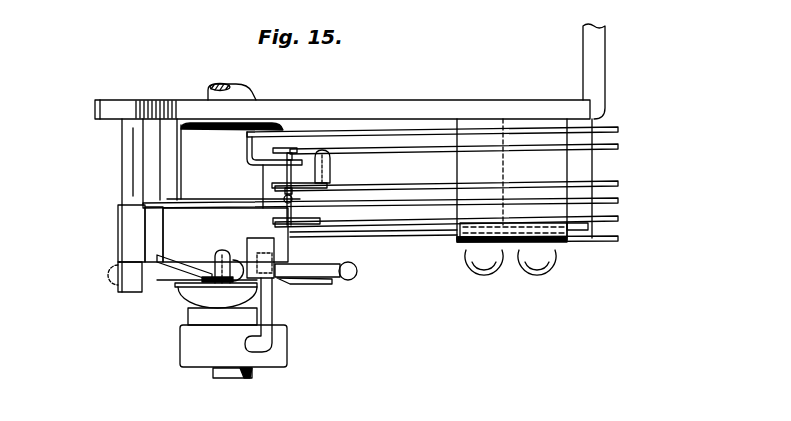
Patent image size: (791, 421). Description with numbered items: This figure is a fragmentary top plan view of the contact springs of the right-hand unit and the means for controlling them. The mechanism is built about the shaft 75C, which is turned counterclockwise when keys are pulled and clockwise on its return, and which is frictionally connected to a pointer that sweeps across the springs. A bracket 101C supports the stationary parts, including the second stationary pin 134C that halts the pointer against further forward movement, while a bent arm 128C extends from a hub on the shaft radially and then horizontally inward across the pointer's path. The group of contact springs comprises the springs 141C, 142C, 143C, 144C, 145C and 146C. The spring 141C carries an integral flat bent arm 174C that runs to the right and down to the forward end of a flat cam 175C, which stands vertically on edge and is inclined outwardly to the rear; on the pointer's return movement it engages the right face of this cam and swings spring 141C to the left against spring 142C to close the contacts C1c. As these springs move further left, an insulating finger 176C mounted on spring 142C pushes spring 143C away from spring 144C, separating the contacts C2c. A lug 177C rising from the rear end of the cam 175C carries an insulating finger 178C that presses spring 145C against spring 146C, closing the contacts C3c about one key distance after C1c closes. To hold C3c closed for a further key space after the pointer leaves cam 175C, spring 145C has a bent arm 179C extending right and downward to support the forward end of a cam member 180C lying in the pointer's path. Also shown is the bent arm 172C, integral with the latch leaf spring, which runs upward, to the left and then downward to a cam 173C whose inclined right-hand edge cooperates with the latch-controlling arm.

The shaft 75C is at (247, 91).
The bracket 101C is at (600, 60).
The second stationary pin 134C is at (130, 177).
The contact spring 143C is at (397, 131).
The contact spring 144C is at (422, 148).
The contact spring 142C is at (398, 184).
The contact spring 141C is at (403, 207).
The contact spring 145C is at (384, 243).
The contact spring 146C is at (395, 222).
The finger 176C is at (323, 148).
The cam 173C is at (275, 198).
The bent arm 172C is at (270, 213).
The bent arm 174C is at (152, 233).
The flat cam 175C is at (185, 266).
The lug 177C is at (200, 284).
The finger 178C is at (217, 262).
The bent arm 179C is at (273, 283).
The cam member 180C is at (272, 280).
The bent arm 128C is at (272, 340).
The contacts C1c is at (300, 192).
The contacts C2c is at (284, 164).
The contacts C3c is at (298, 238).